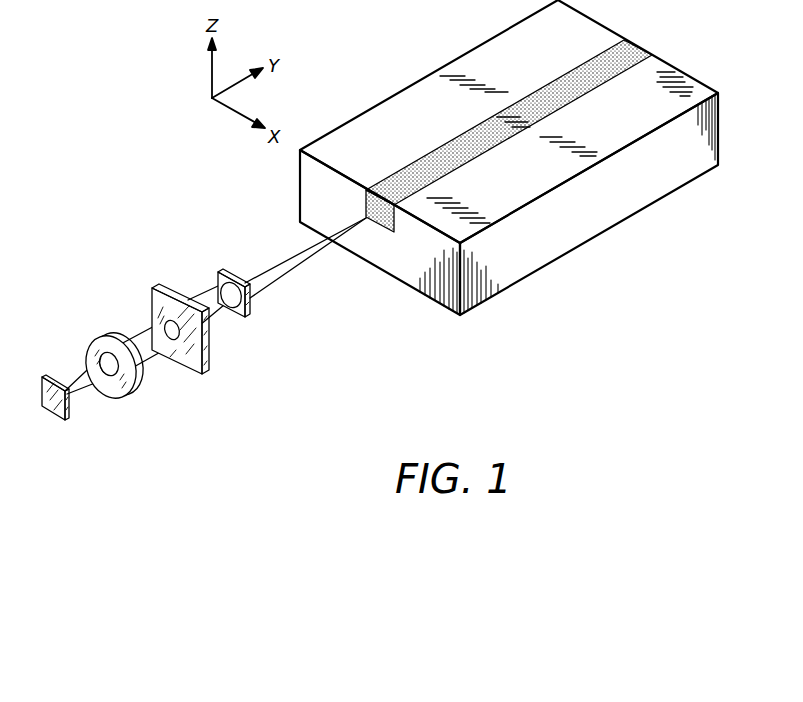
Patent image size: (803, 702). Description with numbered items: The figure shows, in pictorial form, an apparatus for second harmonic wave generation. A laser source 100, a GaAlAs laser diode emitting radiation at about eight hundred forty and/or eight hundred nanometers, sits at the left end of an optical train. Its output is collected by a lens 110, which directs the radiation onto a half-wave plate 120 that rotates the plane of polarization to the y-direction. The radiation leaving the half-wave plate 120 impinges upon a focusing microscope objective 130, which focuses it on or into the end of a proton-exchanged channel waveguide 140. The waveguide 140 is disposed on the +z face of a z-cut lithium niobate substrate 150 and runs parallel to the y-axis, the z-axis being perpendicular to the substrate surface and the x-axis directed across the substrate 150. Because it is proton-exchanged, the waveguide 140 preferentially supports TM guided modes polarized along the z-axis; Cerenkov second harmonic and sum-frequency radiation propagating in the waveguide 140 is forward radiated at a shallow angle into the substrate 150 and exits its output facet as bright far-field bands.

The laser source 100 is at (68, 404).
The lens 110 is at (135, 382).
The half-wave plate 120 is at (207, 347).
The focusing microscope objective 130 is at (250, 305).
The proton-exchanged channel waveguide 140 is at (583, 72).
The z-cut LiNbO3 substrate 150 is at (628, 193).